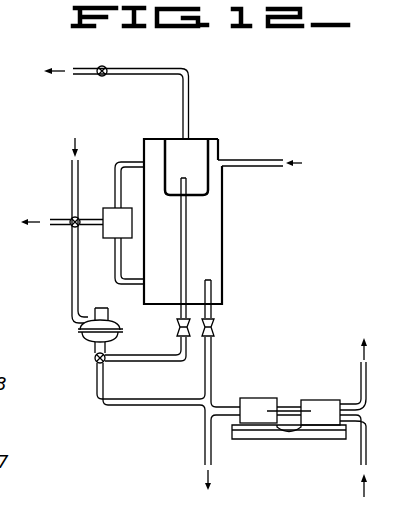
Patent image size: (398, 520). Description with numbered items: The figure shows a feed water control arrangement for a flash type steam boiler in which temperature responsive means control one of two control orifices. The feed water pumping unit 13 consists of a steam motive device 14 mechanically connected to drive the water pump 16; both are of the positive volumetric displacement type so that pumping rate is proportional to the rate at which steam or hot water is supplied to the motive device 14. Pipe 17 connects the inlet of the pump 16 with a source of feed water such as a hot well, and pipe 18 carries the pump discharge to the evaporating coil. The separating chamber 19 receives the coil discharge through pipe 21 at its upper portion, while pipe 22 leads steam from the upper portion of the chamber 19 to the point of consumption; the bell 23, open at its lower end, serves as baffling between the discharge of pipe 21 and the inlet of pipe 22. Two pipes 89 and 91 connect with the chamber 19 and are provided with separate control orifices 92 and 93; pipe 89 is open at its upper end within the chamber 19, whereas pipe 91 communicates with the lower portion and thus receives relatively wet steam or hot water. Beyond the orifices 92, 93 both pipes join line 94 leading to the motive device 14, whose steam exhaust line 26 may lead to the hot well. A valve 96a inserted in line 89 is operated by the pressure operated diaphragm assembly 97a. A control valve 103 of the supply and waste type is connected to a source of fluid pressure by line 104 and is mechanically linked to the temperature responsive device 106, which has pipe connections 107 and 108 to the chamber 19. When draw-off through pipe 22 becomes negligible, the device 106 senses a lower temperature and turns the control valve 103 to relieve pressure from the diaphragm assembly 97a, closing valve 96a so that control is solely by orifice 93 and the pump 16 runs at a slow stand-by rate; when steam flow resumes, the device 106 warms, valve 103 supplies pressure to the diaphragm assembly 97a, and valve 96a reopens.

The feed water pumping unit 13 is at (294, 440).
The steam motive device 14 is at (263, 399).
The water pump 16 is at (310, 400).
The pipe 17 is at (358, 457).
The pipe 18 is at (358, 378).
The separating chamber 19 is at (224, 227).
The pipe 21 is at (258, 166).
The pipe 22 is at (191, 89).
The bell 23 is at (212, 141).
The steam exhaust line 26 is at (203, 450).
The pipe 89 is at (146, 362).
The pipe 91 is at (212, 294).
The control orifice 92 is at (175, 330).
The control orifice 93 is at (214, 329).
The line 94 is at (217, 400).
The valve 96a is at (97, 362).
The diaphragm assembly 97a is at (125, 317).
The control valve 103 is at (70, 230).
The line 104 is at (68, 180).
The temperature responsive device 106 is at (103, 208).
The pipe connection 107 is at (125, 158).
The pipe connection 108 is at (114, 268).